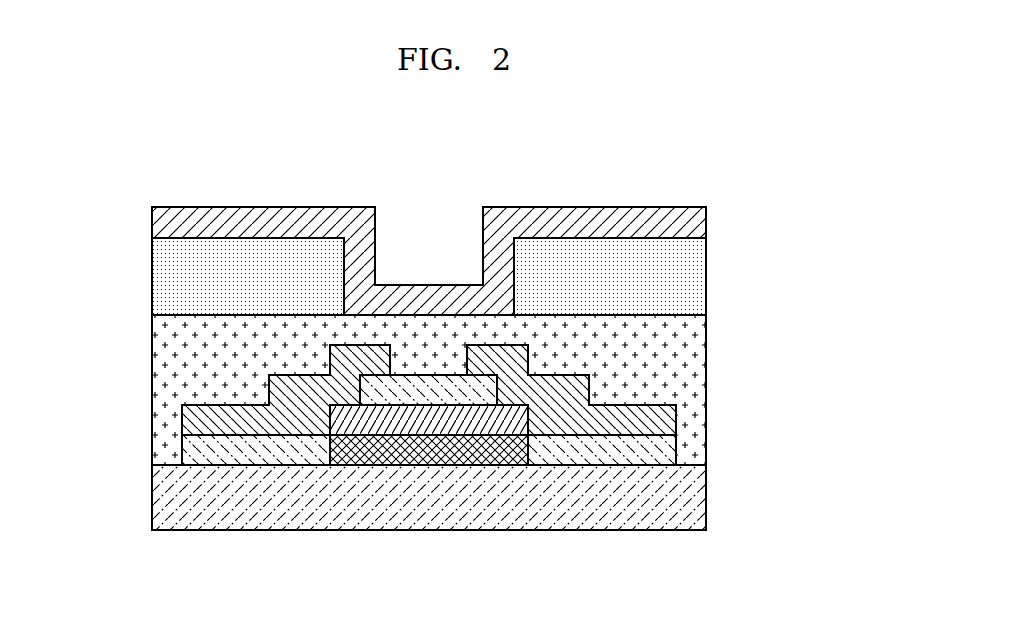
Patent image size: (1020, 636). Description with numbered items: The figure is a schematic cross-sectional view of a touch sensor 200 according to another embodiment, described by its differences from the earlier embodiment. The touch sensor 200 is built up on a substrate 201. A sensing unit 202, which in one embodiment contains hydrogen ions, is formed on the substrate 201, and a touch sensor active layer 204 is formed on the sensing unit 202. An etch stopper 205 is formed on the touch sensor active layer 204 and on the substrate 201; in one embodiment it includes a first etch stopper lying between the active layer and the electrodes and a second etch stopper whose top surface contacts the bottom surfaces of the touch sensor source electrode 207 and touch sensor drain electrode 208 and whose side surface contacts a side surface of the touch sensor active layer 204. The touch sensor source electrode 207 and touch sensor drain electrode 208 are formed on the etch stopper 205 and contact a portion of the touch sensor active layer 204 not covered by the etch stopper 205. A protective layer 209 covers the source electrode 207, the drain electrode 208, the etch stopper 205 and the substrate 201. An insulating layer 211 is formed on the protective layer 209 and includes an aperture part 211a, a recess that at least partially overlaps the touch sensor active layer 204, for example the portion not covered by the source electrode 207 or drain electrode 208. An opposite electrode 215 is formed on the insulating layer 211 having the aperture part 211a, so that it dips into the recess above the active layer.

The touch sensor 200 is at (637, 165).
The substrate 201 is at (693, 497).
The sensing unit 202 is at (473, 453).
The touch sensor active layer 204 is at (413, 408).
The etch stopper 205 is at (197, 453).
The touch sensor source electrode 207 is at (193, 427).
The touch sensor drain electrode 208 is at (667, 425).
The protective layer 209 is at (693, 347).
The insulating layer 211 is at (165, 275).
The aperture part 211a is at (347, 264).
The opposite electrode 215 is at (692, 226).